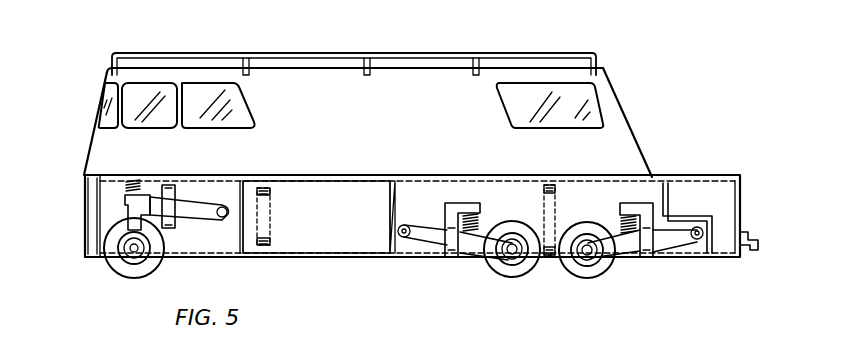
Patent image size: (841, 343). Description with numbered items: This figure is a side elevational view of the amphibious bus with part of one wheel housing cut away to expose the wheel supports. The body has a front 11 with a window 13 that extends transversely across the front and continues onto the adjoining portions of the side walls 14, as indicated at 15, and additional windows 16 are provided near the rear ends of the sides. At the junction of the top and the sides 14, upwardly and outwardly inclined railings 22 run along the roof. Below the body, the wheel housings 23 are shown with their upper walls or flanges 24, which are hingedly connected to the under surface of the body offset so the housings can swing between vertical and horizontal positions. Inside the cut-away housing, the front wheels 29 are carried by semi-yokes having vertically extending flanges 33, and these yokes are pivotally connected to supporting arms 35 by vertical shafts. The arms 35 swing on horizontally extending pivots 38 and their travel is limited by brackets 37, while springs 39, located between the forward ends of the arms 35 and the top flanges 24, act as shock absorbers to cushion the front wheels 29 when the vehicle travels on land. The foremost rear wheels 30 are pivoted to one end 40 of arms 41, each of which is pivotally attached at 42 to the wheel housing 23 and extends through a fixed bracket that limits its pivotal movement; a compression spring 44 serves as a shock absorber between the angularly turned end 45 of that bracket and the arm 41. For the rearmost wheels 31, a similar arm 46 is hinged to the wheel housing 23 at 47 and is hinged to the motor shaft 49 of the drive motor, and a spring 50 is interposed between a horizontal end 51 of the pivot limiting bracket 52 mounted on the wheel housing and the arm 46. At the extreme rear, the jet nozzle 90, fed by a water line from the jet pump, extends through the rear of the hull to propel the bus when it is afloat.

The front 11 is at (85, 143).
The window 13 is at (103, 100).
The side walls 14 is at (362, 121).
The adjoining window portions 15 is at (205, 98).
The additional windows 16 is at (548, 93).
The railings 22 is at (354, 52).
The wheel housings 23 is at (380, 170).
The upper walls or flanges 24 is at (335, 178).
The front wheels 29 is at (122, 270).
The foremost rear wheels 30 is at (512, 277).
The rear wheels 31 is at (597, 278).
The flanges 33 is at (130, 230).
The supporting arms 35 is at (190, 200).
The brackets 37 is at (172, 186).
The pivots 38 is at (228, 210).
The springs 39 is at (135, 188).
The arm end 40 is at (495, 253).
The arms 41 is at (473, 247).
The pivot 42 is at (398, 231).
The compression spring 44 is at (490, 235).
The angularly turned end 45 is at (455, 205).
The arm 46 is at (660, 242).
The hinge 47 is at (698, 240).
The motor shaft 49 is at (585, 268).
The spring 50 is at (630, 204).
The horizontal end 51 is at (630, 212).
The pivot limiting bracket 52 is at (645, 242).
The jet nozzle 90 is at (763, 241).